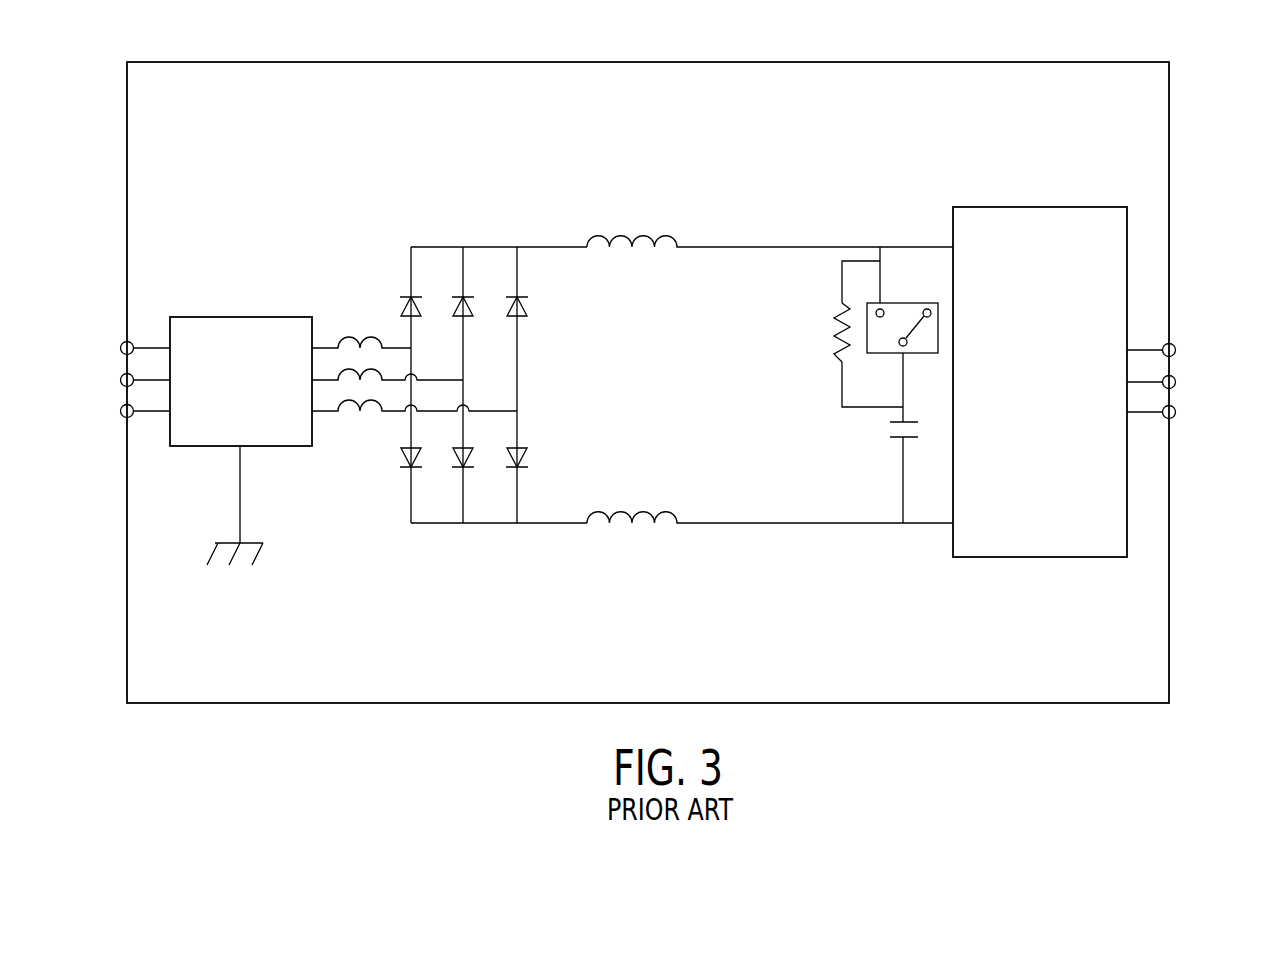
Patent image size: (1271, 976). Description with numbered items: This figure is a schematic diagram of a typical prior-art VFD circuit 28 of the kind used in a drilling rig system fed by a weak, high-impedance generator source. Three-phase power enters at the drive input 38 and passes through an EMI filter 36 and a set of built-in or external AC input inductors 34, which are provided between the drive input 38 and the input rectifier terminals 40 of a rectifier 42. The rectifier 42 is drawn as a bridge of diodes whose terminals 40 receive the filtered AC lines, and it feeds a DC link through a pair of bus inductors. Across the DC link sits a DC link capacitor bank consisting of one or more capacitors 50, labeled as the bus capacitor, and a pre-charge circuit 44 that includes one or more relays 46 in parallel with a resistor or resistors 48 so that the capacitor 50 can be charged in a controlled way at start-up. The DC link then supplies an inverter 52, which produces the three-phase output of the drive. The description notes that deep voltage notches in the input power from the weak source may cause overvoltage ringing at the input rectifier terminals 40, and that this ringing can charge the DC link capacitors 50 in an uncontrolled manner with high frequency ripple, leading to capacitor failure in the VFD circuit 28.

The VFD circuit 28 is at (799, 92).
The AC input inductors 34 is at (352, 338).
The electromagnetic interference (EMI) filter 36 is at (186, 317).
The drive input 38 is at (120, 414).
The input rectifier terminals 40 is at (411, 347).
The rectifier 42 is at (542, 323).
The pre-charge circuit 44 is at (786, 320).
The relay 46 is at (893, 303).
The resistor 48 is at (833, 318).
The DC link capacitor 50 is at (910, 431).
The inverter 52 is at (985, 207).